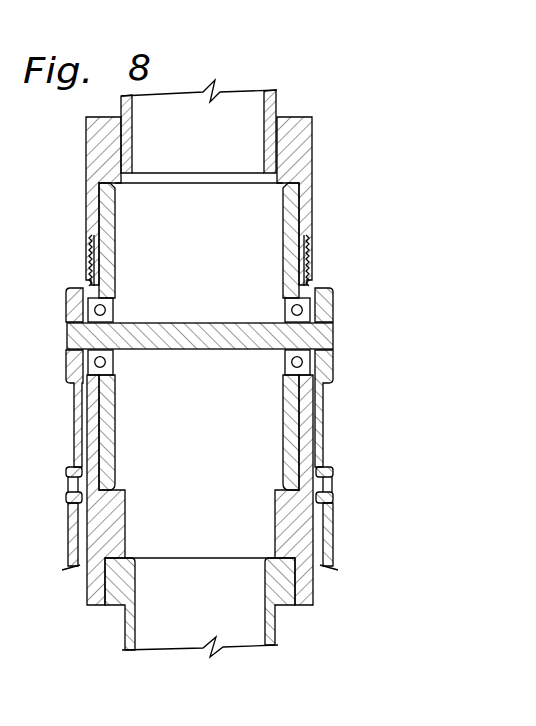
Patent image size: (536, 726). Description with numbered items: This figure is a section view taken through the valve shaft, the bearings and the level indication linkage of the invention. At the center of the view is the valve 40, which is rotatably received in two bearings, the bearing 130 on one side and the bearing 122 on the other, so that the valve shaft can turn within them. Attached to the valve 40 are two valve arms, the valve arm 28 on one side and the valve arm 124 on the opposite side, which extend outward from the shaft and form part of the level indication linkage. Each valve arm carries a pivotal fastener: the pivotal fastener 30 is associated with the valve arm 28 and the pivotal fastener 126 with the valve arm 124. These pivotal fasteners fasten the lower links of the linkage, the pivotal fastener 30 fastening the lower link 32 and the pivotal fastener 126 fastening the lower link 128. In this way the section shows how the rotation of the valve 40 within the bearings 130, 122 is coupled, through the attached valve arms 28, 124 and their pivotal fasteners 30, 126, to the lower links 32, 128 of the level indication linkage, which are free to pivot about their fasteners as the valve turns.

The bearing 130 is at (86, 283).
The bearing 122 is at (313, 290).
The valve 40 is at (68, 342).
The valve arm 28 is at (65, 365).
The valve arm 124 is at (333, 373).
The pivotal fastener 30 is at (67, 483).
The pivotal fastener 126 is at (333, 483).
The lower link 32 is at (67, 538).
The lower link 128 is at (335, 538).